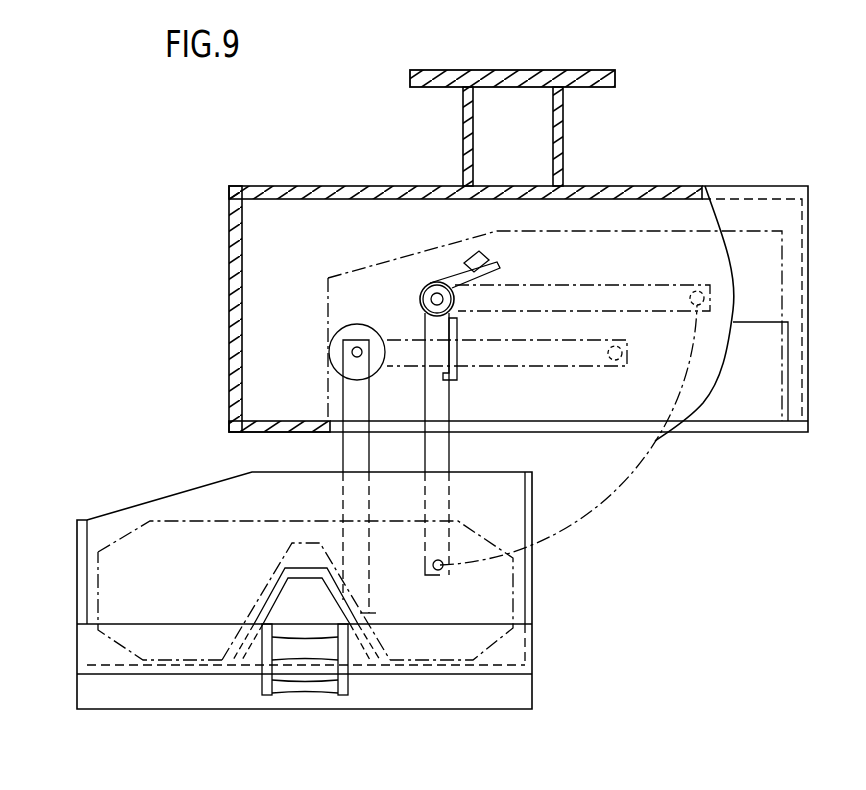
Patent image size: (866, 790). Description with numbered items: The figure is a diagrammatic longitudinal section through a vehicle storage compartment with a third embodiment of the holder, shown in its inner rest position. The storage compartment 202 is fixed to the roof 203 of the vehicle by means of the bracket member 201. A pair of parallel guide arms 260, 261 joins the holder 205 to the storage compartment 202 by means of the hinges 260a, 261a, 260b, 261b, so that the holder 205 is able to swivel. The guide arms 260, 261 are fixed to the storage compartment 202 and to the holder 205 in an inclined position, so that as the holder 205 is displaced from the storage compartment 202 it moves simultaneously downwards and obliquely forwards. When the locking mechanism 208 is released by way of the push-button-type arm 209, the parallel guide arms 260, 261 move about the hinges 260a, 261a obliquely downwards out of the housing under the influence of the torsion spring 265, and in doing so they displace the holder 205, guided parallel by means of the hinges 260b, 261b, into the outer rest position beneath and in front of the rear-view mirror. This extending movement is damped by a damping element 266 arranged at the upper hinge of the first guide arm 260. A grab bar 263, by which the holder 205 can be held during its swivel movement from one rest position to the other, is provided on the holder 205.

The bracket member 201 is at (563, 136).
The storage compartment 202 is at (680, 169).
The roof 203 is at (533, 71).
The holder 205 is at (536, 652).
The locking mechanism 208 is at (305, 624).
The push-button-type arm 209 is at (327, 668).
The guide arm 260 is at (345, 458).
The hinge 260a is at (352, 352).
The hinge 260b is at (369, 612).
The guide arm 261 is at (441, 459).
The hinge 261a is at (420, 297).
The hinge 261b is at (442, 571).
The grab bar 263 is at (463, 693).
The torsion spring 265 is at (500, 266).
The damping element 266 is at (356, 330).